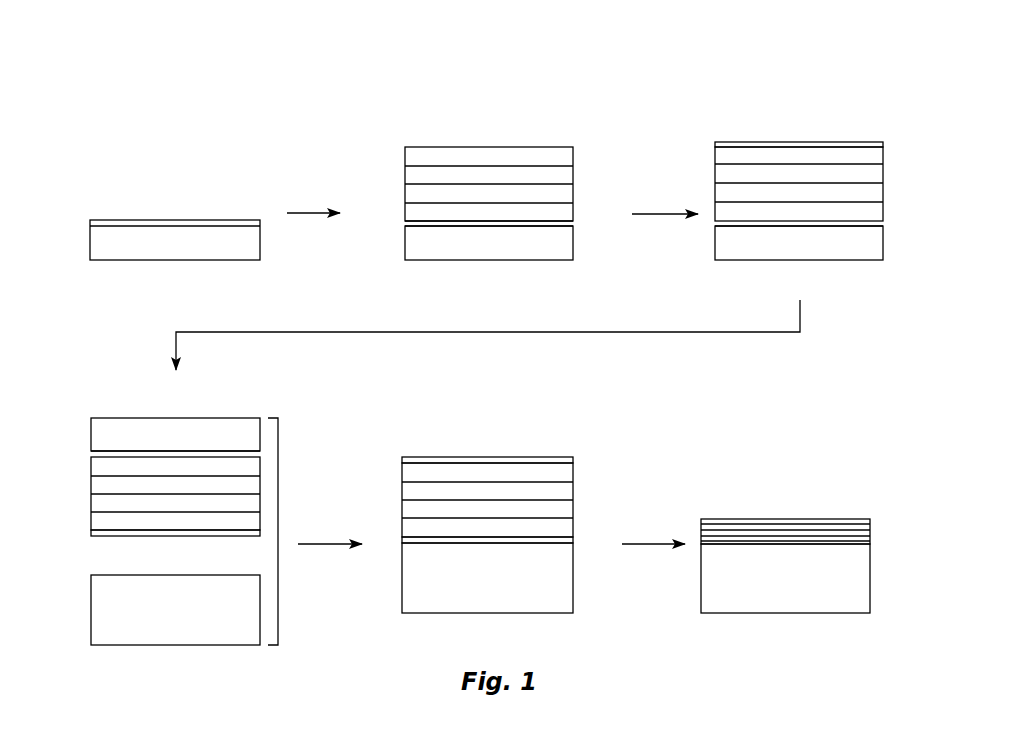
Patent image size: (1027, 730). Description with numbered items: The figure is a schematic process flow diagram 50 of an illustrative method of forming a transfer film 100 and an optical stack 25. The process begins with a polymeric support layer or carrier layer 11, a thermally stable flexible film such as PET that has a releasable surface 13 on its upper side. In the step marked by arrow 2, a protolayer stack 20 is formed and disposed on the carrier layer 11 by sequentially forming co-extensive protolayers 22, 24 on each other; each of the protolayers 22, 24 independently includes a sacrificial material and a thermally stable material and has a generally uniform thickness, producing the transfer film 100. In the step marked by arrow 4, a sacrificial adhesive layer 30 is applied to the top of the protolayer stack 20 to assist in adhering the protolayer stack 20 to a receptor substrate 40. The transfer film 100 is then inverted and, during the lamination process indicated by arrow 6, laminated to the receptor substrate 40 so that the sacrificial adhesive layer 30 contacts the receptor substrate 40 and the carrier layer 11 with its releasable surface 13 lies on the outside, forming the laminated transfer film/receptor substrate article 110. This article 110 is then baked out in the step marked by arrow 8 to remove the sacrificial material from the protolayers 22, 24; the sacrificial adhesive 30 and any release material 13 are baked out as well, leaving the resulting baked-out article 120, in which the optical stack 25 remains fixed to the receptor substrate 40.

The polymeric support layer 11 is at (98, 242).
The releasable surface 13 is at (172, 219).
The arrow 2 is at (313, 213).
The protolayer stack 20 is at (458, 323).
The protolayer 22 is at (568, 173).
The protolayer 24 is at (568, 157).
The transfer film 100 is at (479, 323).
The arrow 4 is at (660, 214).
The schematic process flow diagram 50 is at (798, 55).
The sacrificial adhesive layer 30 is at (796, 141).
The receptor substrate 40 is at (97, 613).
The arrow 6 is at (325, 544).
The laminated transfer film/receptor substrate article 110 is at (530, 430).
The arrow 8 is at (648, 544).
The transferred multilayer article 120 is at (817, 496).
The optical stack 25 is at (875, 519).